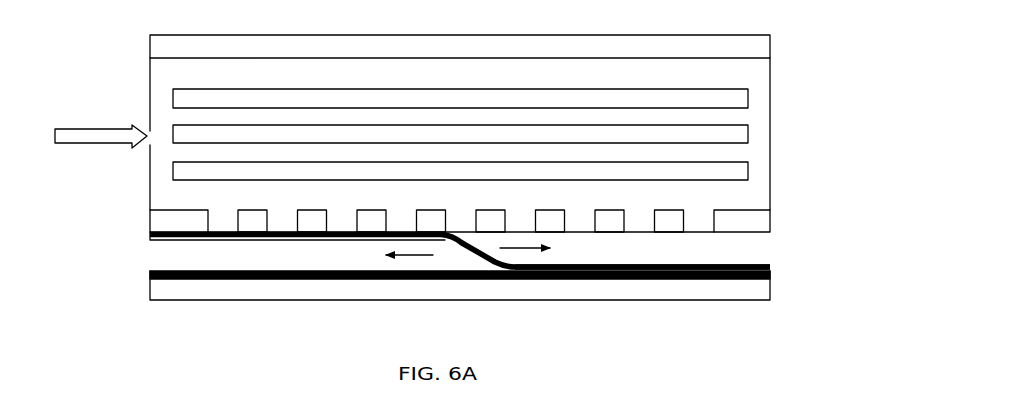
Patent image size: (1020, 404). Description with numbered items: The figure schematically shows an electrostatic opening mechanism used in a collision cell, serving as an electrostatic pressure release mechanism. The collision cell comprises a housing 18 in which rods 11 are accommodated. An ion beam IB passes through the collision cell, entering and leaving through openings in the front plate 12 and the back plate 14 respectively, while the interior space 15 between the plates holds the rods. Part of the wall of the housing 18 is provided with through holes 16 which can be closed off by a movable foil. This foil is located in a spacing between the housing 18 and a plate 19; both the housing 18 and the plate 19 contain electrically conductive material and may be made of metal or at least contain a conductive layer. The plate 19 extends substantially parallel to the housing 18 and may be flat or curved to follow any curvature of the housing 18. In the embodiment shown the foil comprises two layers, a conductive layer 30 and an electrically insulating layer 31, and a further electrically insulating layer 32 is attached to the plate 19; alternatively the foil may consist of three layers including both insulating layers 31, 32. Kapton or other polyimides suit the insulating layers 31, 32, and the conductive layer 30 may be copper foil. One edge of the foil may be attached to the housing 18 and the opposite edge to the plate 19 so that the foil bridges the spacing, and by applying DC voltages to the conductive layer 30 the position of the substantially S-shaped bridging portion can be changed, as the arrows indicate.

The rods 11 is at (415, 89).
The front plate 12 is at (150, 176).
The back plate 14 is at (771, 78).
The chamber 15 is at (774, 131).
The through holes 16 is at (637, 220).
The housing 18 is at (771, 223).
The plate 19 is at (771, 287).
The conductive layer 30 is at (151, 241).
The electrically insulating layer 31 is at (771, 264).
The further electrically insulating layer 32 is at (771, 275).
The ion beam IB is at (94, 130).